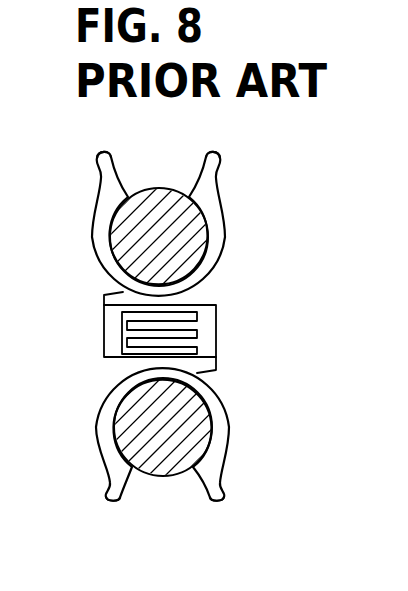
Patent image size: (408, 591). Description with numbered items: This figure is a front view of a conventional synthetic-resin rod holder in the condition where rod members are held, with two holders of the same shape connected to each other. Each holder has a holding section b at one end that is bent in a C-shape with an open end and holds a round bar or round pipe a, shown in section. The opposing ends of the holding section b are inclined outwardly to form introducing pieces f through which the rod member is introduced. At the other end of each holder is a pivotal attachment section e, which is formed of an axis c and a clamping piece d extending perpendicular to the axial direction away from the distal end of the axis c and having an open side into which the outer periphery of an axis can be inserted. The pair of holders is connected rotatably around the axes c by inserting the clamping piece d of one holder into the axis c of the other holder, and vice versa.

The round bar or round pipe a is at (197, 237).
The holding section b is at (210, 265).
The axis c is at (98, 298).
The clamping piece d is at (193, 312).
The pivotal attachment section e is at (108, 328).
The introducing pieces f is at (101, 156).